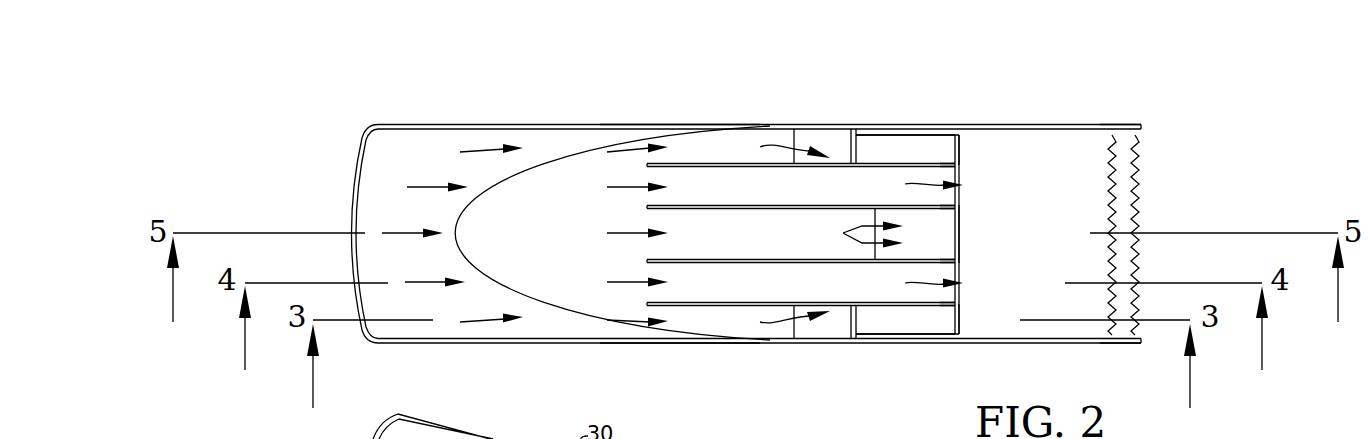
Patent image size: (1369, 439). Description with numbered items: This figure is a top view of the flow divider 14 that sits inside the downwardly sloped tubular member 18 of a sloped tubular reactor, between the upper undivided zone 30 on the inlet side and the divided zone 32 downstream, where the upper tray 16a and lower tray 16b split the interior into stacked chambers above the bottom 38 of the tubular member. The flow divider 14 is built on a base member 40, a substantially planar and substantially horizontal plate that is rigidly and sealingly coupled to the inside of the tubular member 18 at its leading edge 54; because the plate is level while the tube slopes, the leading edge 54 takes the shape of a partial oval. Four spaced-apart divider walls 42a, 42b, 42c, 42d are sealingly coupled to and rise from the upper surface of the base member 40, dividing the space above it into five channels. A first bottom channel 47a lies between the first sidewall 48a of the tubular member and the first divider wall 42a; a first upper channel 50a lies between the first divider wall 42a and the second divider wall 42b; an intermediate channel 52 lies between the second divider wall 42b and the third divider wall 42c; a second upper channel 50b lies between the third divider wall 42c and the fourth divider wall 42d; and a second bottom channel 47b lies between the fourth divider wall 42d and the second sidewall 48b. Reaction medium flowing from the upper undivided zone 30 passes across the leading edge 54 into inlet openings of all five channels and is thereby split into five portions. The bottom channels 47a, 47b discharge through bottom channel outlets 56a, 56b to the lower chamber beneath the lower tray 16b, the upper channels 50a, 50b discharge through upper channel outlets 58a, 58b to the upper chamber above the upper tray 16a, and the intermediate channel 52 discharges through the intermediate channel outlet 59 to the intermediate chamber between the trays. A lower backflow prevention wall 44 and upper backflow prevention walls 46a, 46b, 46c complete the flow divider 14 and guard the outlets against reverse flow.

The flow divider 14 is at (562, 158).
The upper tray 16a is at (1095, 193).
The lower tray 16b is at (1128, 215).
The tubular member 18 is at (1017, 125).
The upper undivided zone 30 is at (425, 216).
The divided zone 32 is at (1058, 171).
The bottom of tubular member 38 is at (824, 146).
The base member 40 is at (487, 290).
The first divider wall 42a is at (957, 311).
The second divider wall 42b is at (957, 268).
The third divider wall 42c is at (957, 203).
The fourth divider wall 42d is at (957, 160).
The lower backflow prevention wall 44 is at (866, 146).
The first upper backflow prevention wall 46a is at (958, 335).
The second upper backflow prevention wall 46b is at (960, 228).
The third upper backflow prevention wall 46c is at (963, 135).
The first bottom channel 47a is at (749, 319).
The second bottom channel 47b is at (749, 147).
The first sidewall 48a is at (628, 340).
The second sidewall 48b is at (628, 128).
The first upper channel 50a is at (714, 282).
The second upper channel 50b is at (714, 184).
The intermediate channel 52 is at (683, 228).
The leading edge 54 is at (487, 208).
The first bottom channel outlet 56a is at (821, 329).
The second bottom channel outlet 56b is at (823, 138).
The first upper channel outlet 58a is at (960, 262).
The second upper channel outlet 58b is at (960, 192).
The intermediate channel outlet 59 is at (916, 238).